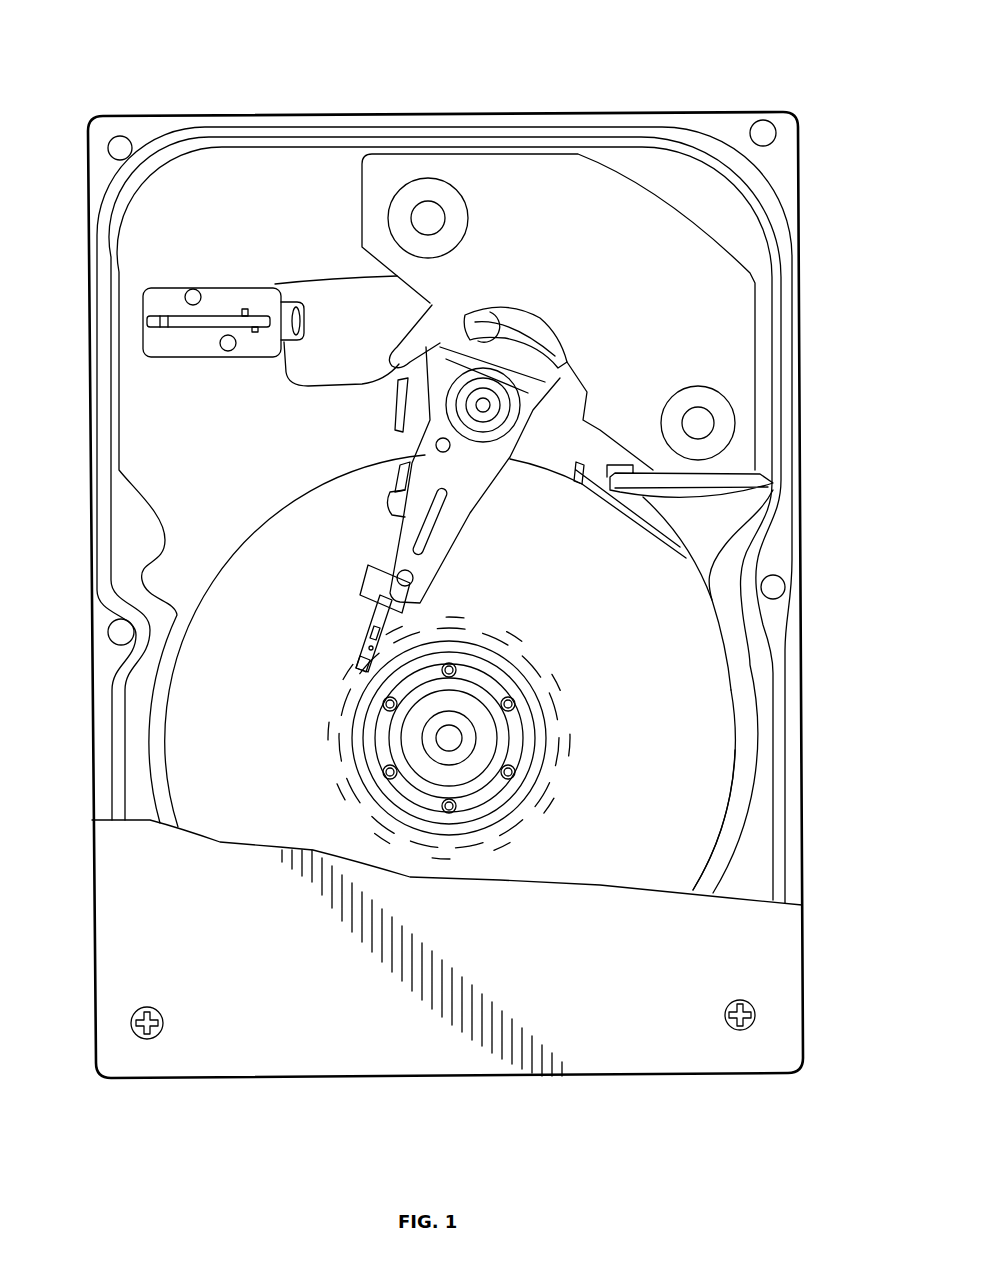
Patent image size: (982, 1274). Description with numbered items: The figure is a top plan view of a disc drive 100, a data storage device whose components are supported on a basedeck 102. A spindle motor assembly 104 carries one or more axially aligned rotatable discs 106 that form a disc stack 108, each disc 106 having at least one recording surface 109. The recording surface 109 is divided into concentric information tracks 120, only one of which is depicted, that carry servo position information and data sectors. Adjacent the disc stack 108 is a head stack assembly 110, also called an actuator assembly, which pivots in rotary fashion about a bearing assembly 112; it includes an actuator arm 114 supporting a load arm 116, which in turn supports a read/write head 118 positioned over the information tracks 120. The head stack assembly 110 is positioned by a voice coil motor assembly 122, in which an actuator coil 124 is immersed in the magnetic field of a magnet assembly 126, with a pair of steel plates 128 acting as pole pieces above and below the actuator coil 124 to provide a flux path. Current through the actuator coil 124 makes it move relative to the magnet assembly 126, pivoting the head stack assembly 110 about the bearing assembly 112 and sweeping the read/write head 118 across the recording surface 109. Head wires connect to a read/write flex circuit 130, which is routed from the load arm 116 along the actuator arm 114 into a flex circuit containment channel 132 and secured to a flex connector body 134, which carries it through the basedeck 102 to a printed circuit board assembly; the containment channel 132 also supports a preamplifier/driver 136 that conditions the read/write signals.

The disc drive 100 is at (355, 82).
The basedeck 102 is at (283, 190).
The spindle motor assembly 104 is at (503, 668).
The rotatable disc 106 is at (733, 720).
The disc stack 108 is at (746, 755).
The recording surface 109 is at (637, 620).
The head stack assembly 110 is at (486, 521).
The bearing assembly 112 is at (533, 390).
The actuator arm 114 is at (418, 567).
The load arm 116 is at (370, 630).
The read/write head 118 is at (358, 668).
The information track 120 is at (538, 798).
The voice coil motor assembly 122 is at (748, 260).
The actuator coil 124 is at (485, 320).
The magnet assembly 126 is at (504, 168).
The steel plates 128 is at (725, 355).
The read/write flex circuit 130 is at (285, 380).
The flex circuit containment channel 132 is at (398, 500).
The flex connector body 134 is at (157, 348).
The preamplifier/driver 136 is at (397, 400).